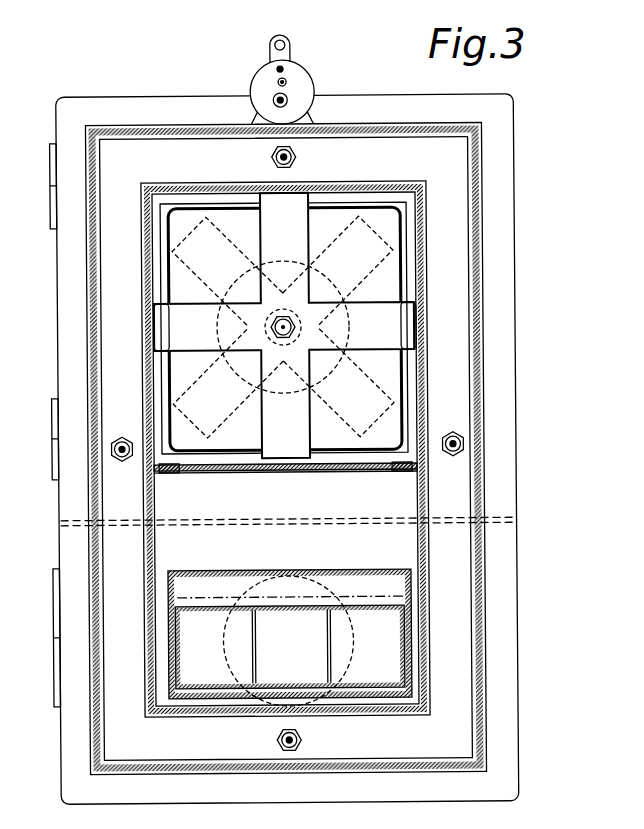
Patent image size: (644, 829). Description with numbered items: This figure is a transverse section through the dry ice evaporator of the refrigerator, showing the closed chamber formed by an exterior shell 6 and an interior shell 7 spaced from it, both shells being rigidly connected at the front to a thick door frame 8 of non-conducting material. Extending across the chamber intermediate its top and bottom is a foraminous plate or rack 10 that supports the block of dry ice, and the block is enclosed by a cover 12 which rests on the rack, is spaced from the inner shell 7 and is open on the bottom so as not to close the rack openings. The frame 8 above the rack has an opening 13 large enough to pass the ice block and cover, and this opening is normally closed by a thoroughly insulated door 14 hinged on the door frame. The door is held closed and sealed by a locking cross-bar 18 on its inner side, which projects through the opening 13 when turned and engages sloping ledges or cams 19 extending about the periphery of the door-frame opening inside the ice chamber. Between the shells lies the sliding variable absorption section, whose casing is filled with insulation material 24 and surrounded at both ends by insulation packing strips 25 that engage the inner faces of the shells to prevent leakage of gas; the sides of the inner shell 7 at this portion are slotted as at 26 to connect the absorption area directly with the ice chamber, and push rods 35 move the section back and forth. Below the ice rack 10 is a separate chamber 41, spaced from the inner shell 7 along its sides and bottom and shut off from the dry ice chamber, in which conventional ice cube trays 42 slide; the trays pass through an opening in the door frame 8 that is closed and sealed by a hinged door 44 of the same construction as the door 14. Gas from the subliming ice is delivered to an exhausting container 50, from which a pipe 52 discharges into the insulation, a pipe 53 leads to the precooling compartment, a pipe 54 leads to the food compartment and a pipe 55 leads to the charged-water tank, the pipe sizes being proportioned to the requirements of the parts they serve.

The exterior shell 6 is at (92, 632).
The interior shell 7 is at (148, 666).
The door frame 8 is at (70, 335).
The foraminous plate or rack 10 is at (397, 471).
The cover 12 is at (172, 372).
The opening 13 is at (238, 437).
The insulated door 14 is at (293, 518).
The locking cross-bar 18 is at (275, 247).
The sloping ledges or cams 19 is at (412, 298).
The insulation material 24 is at (118, 551).
The insulation packing strips 25 is at (472, 381).
The slots 26 is at (428, 262).
The push rods 35 is at (299, 157).
The separate chamber 41 is at (347, 588).
The ice cube trays 42 is at (273, 667).
The hinged door 44 is at (260, 525).
The exhausting container 50 is at (253, 88).
The pipe 52 is at (276, 101).
The pipe 53 is at (273, 47).
The pipe 54 is at (290, 82).
The pipe 55 is at (287, 68).